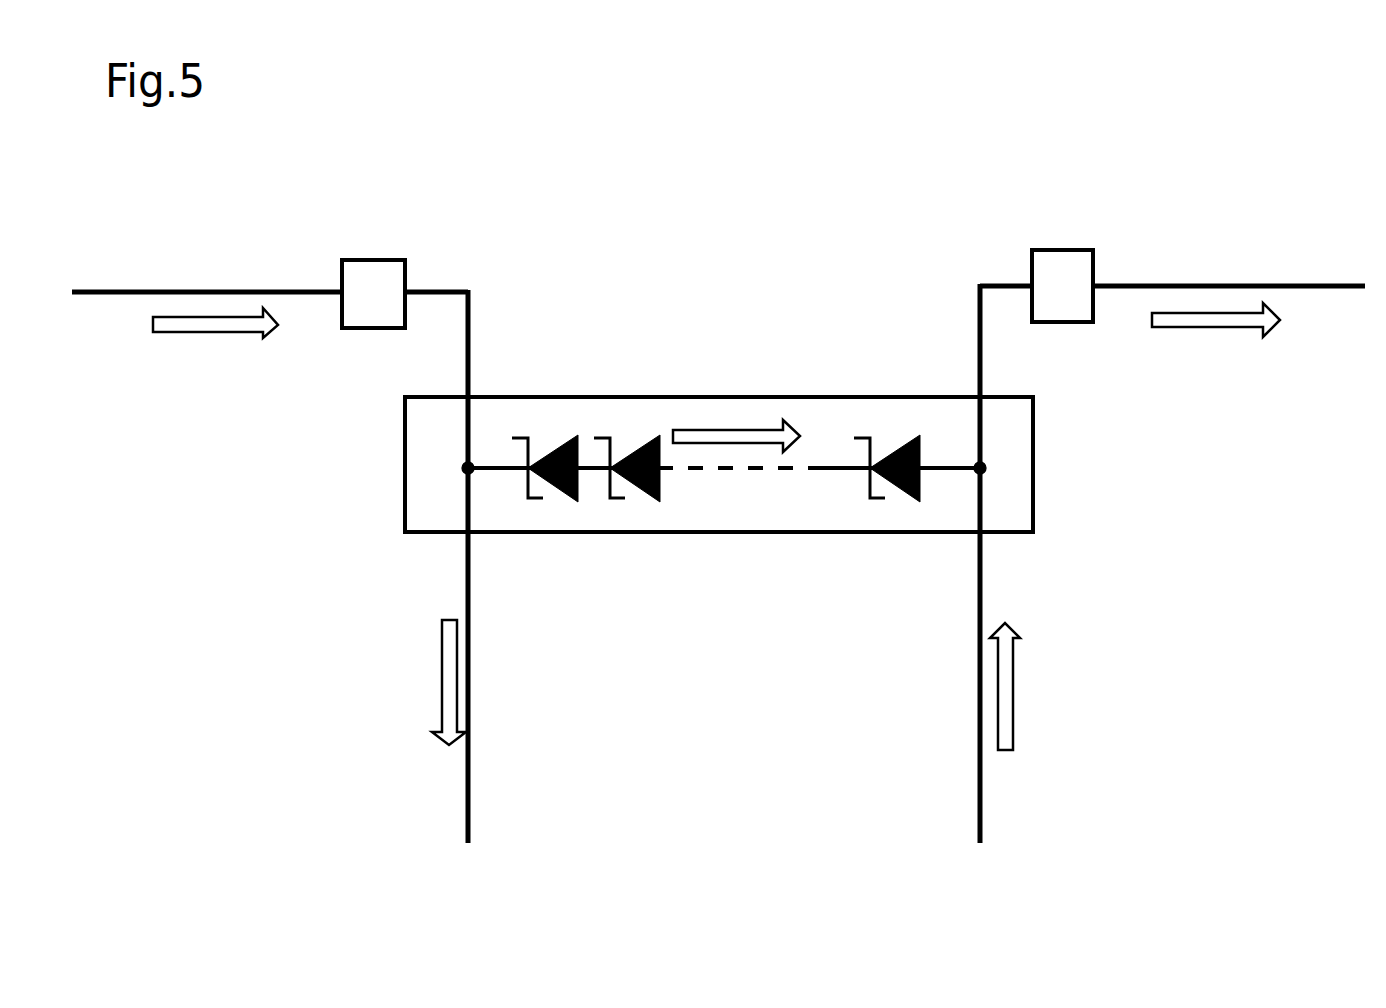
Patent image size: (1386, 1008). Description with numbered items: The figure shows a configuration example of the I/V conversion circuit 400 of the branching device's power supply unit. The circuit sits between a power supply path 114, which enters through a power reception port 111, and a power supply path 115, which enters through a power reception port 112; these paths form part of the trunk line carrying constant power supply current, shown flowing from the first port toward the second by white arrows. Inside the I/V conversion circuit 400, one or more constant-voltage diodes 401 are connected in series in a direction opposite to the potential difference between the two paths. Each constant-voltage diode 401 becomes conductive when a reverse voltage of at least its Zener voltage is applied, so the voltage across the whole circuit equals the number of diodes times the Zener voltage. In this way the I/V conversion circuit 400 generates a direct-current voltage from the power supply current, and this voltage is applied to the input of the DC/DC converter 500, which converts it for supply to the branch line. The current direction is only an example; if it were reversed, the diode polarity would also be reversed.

The power supply path 114 is at (252, 292).
The power reception port 111 is at (375, 260).
The power reception port 112 is at (1058, 250).
The power supply path 115 is at (1302, 286).
The I/V conversion circuit 400 is at (700, 395).
The constant-voltage diode 401 is at (647, 503).
The DC/DC converter 500 is at (711, 852).